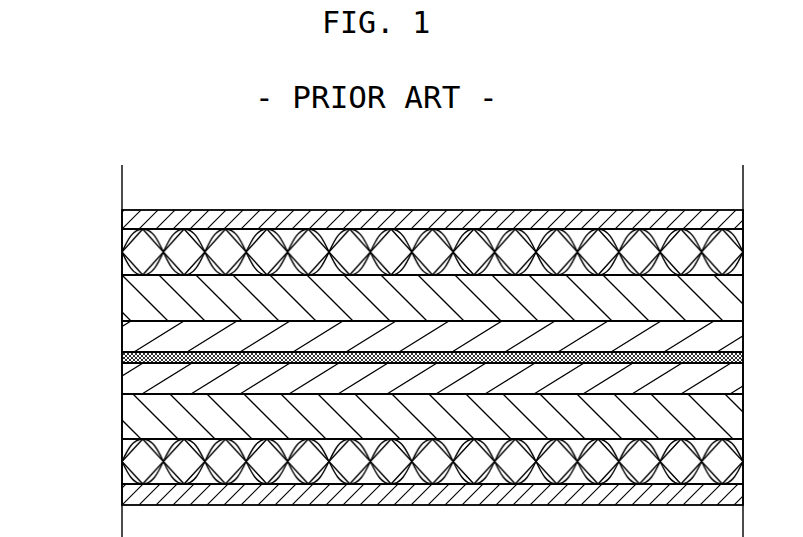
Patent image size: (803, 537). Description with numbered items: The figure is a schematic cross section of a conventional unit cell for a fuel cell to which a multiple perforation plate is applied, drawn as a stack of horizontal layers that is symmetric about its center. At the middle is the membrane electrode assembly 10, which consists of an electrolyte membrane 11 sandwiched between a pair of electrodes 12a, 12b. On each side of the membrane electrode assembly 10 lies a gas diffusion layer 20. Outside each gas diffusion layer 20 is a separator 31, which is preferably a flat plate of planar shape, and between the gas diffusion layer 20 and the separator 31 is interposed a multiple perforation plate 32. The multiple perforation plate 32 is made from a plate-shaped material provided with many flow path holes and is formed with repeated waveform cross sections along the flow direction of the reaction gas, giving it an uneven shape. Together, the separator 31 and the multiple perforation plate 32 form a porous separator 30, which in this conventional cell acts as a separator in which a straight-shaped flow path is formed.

The membrane electrode assembly 10 is at (371, 356).
The electrolyte membrane 11 is at (135, 357).
The electrode 12a is at (140, 329).
The electrode 12b is at (140, 386).
The gas diffusion layer 20 is at (142, 297).
The porous separator 30 is at (379, 359).
The separator 31 is at (135, 218).
The multiple perforation plate 32 is at (133, 252).